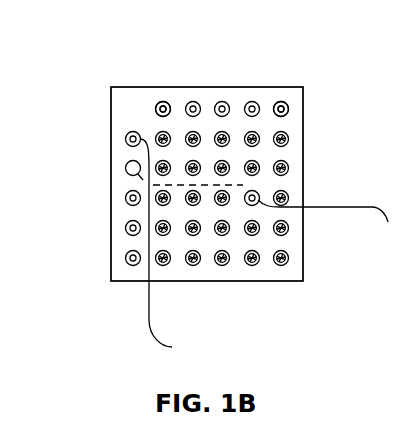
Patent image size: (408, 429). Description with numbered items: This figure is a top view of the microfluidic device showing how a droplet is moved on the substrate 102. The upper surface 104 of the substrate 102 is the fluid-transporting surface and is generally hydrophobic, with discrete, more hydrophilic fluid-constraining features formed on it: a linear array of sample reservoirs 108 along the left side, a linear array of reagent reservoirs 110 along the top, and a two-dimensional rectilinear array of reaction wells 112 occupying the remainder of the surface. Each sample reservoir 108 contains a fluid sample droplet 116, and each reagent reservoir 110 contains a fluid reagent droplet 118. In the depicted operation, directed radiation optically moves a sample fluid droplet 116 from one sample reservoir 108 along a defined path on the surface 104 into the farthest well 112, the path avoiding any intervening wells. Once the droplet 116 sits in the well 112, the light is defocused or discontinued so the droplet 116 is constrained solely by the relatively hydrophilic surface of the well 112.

The substrate 102 is at (126, 87).
The upper surface 104 is at (292, 95).
The sample reservoirs 108 is at (125, 139).
The reagent reservoirs 110 is at (281, 101).
The reaction wells 112 is at (254, 205).
The fluid sample droplet 116 is at (172, 347).
The fluid reagent droplet 118 is at (166, 116).